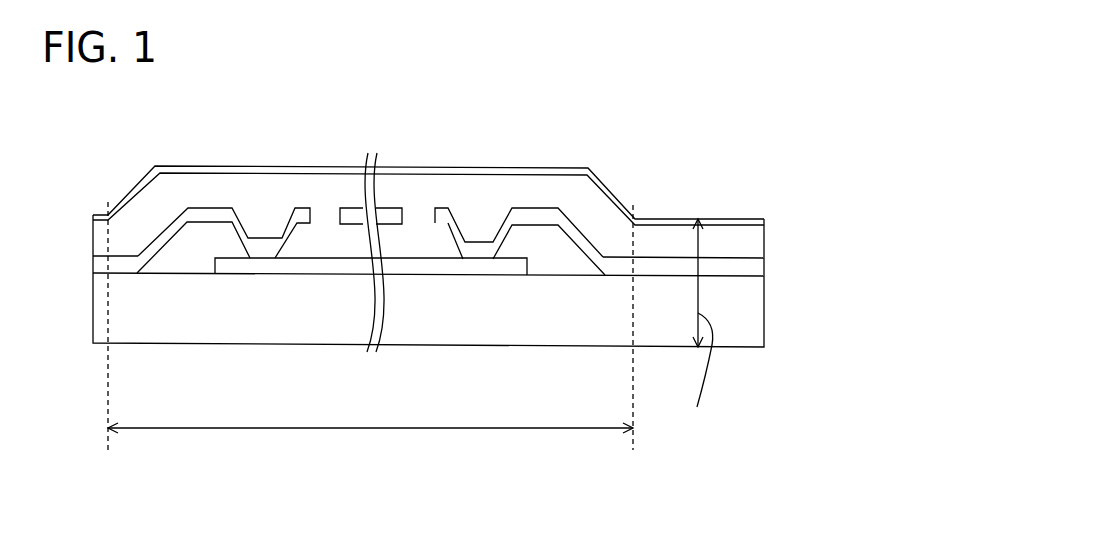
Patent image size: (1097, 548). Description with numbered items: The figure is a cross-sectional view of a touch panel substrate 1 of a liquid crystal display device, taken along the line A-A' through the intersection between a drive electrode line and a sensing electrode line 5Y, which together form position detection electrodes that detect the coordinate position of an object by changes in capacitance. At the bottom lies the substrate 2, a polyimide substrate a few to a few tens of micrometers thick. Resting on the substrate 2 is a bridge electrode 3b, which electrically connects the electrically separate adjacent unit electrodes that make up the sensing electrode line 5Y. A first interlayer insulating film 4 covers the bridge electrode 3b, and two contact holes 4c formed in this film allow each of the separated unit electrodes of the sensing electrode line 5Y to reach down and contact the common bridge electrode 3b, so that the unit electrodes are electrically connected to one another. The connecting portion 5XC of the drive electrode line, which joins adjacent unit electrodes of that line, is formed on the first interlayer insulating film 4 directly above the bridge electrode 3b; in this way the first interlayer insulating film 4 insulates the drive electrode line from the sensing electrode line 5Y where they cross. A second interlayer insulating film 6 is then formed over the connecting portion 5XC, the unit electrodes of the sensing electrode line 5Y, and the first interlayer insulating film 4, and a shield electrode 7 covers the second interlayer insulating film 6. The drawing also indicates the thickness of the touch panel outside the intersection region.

The touch panel substrate 1 is at (700, 118).
The substrate 2 is at (762, 290).
The bridge electrode 3b is at (513, 268).
The first interlayer insulating film 4 is at (187, 264).
The contact hole 4c is at (272, 232).
The sensing electrode line 5Y is at (213, 213).
The connecting portion 5XC is at (380, 217).
The second interlayer insulating film 6 is at (762, 243).
The shield electrode 7 is at (167, 170).